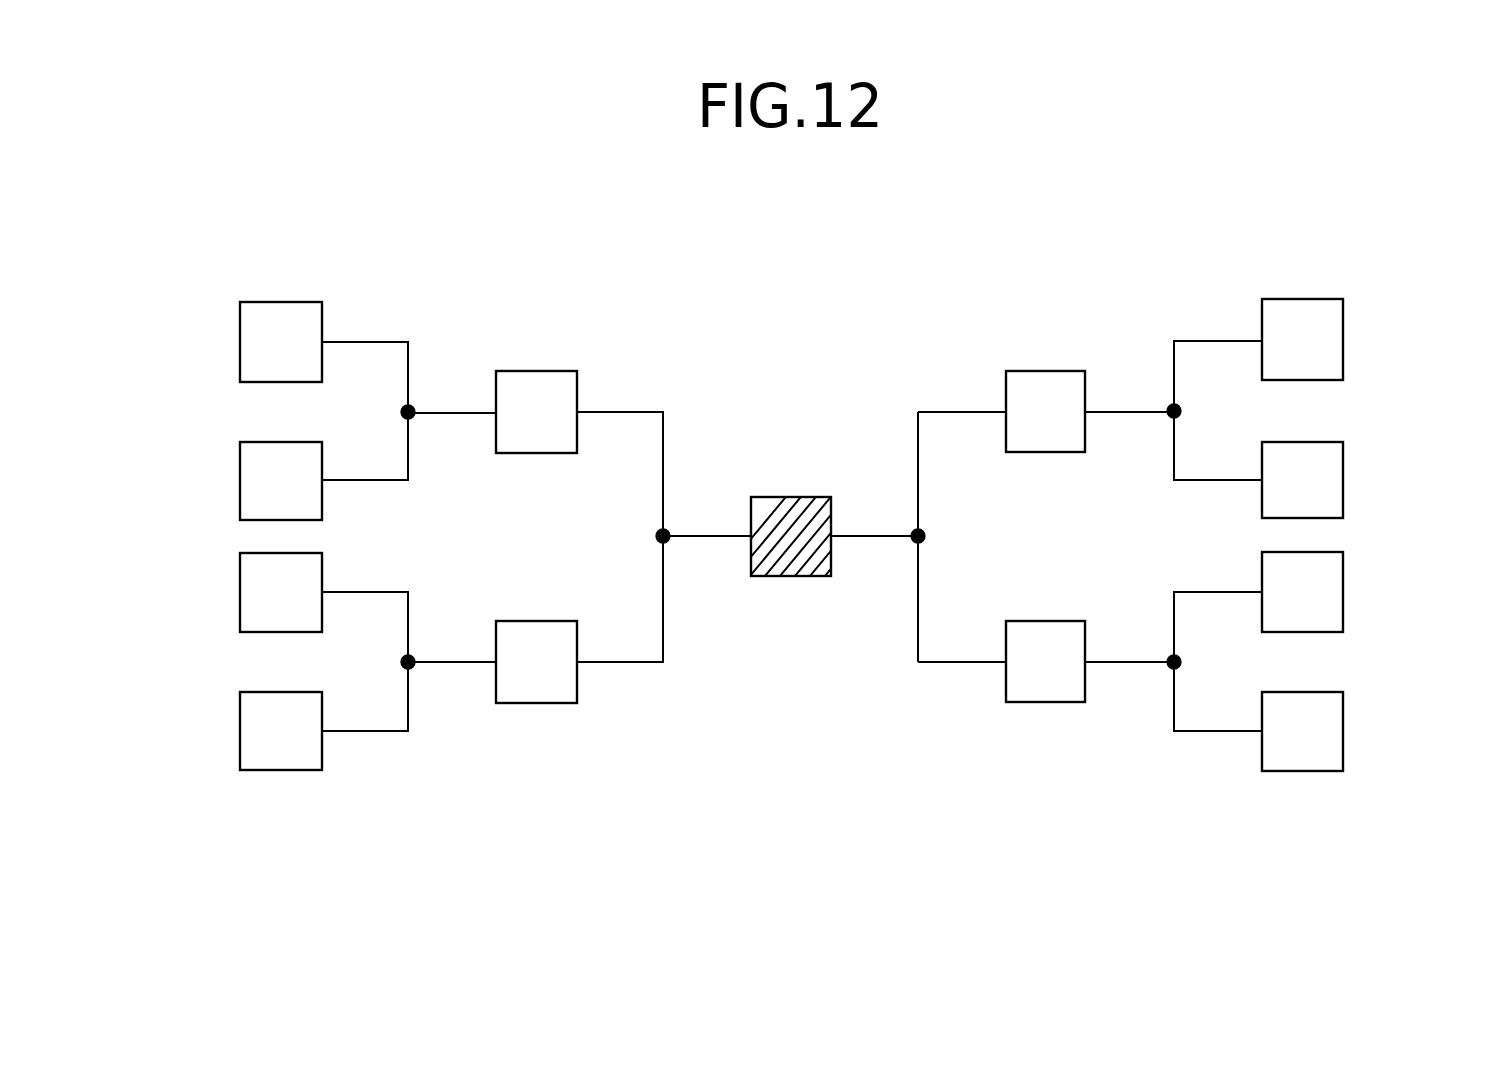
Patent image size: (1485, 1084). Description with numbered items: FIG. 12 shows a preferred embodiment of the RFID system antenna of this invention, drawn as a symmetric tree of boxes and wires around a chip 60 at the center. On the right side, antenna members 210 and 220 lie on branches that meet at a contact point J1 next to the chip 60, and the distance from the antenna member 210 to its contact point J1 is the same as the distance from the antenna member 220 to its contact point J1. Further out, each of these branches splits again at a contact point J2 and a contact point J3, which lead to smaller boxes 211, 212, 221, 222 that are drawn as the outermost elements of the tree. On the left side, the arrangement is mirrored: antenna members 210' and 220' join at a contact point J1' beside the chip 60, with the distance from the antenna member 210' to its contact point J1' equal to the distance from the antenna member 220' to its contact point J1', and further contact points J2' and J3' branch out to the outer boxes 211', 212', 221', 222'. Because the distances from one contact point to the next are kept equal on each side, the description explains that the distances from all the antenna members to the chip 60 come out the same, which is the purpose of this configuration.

The chip 60 is at (788, 506).
The antenna member 210 is at (1060, 375).
The antenna member 220 is at (1060, 700).
The first amplifier unit 211 is at (1349, 339).
The second amplifier unit 212 is at (1349, 480).
The third amplifier unit 221 is at (1349, 592).
The fourth amplifier unit 222 is at (1349, 731).
The antenna member 210' is at (524, 375).
The antenna member 220' is at (524, 700).
The first amplifier unit (mirror) 211' is at (229, 342).
The second amplifier unit (mirror) 212' is at (229, 481).
The third amplifier unit (mirror) 221' is at (229, 592).
The fourth amplifier unit (mirror) 222' is at (229, 731).
The contact point J1 is at (904, 521).
The contact point J2 is at (1159, 396).
The contact point J3 is at (1159, 647).
The contact point J1' is at (685, 521).
The contact point J2' is at (428, 397).
The contact point J3' is at (428, 647).